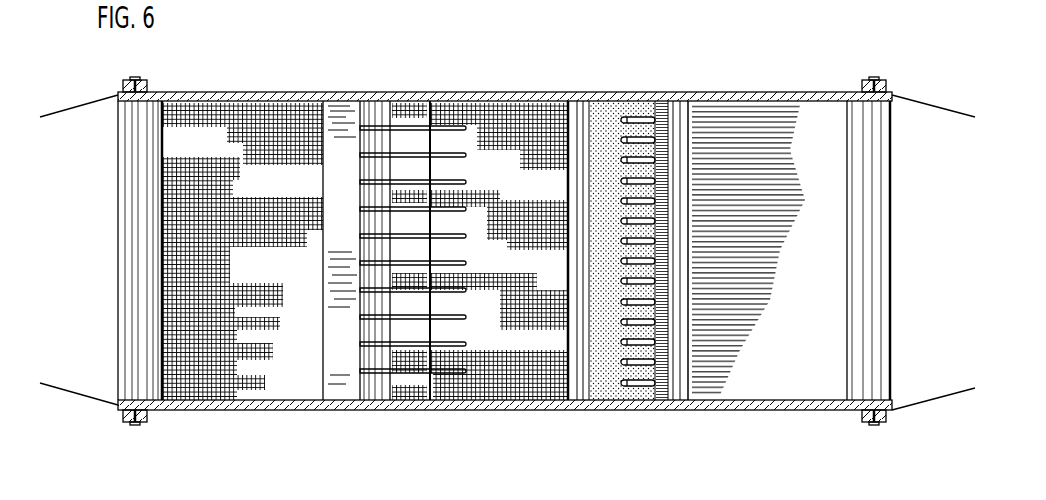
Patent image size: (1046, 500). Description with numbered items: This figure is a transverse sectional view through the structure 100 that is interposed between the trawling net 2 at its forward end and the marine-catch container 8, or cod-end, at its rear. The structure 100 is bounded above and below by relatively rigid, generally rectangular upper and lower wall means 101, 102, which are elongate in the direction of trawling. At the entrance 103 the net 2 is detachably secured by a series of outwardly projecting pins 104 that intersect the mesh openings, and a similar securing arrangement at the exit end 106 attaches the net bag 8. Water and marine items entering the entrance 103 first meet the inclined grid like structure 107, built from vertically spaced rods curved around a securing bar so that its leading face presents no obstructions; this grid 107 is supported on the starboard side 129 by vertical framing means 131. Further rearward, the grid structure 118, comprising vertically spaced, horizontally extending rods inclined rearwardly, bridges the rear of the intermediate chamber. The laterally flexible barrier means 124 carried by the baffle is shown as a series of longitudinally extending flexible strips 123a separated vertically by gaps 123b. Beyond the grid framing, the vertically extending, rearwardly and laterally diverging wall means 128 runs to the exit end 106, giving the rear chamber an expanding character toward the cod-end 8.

The trawling net 2 is at (70, 110).
The marine-catch container 8 is at (932, 104).
The structure 100 is at (448, 86).
The upper wall means 101 is at (230, 94).
The lower wall means 102 is at (240, 411).
The entrance 103 is at (118, 412).
The pins 104 is at (125, 80).
The exit end 106 is at (880, 82).
The inclined grid like structure 107 is at (372, 126).
The grid structure 118 is at (661, 102).
The flexible strips 123a is at (645, 404).
The gaps 123b is at (646, 404).
The barrier means 124 is at (598, 374).
The wall means 128 is at (750, 374).
The starboard side 129 is at (530, 124).
The vertical framing means 131 is at (338, 374).